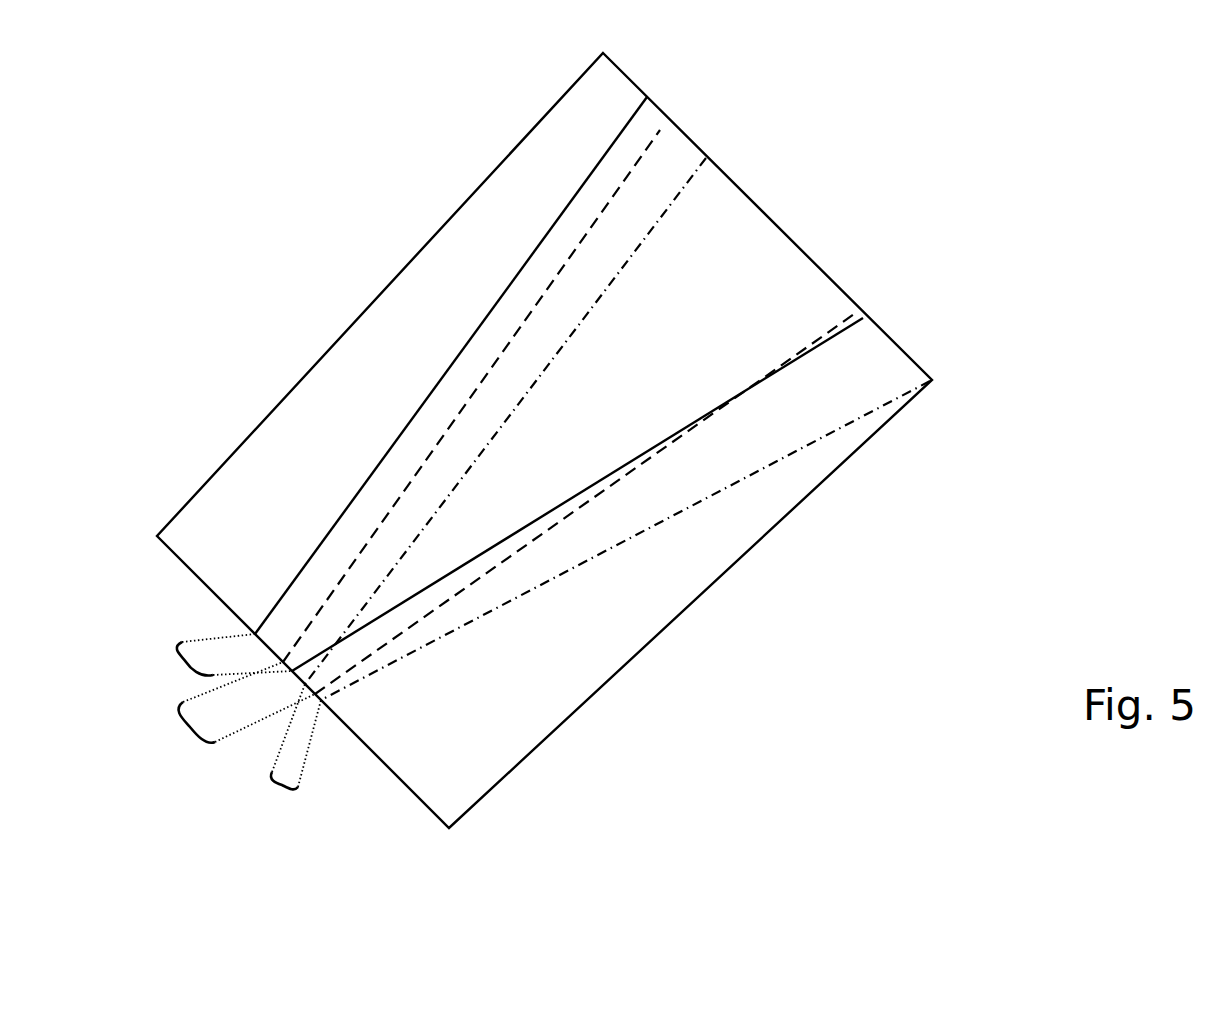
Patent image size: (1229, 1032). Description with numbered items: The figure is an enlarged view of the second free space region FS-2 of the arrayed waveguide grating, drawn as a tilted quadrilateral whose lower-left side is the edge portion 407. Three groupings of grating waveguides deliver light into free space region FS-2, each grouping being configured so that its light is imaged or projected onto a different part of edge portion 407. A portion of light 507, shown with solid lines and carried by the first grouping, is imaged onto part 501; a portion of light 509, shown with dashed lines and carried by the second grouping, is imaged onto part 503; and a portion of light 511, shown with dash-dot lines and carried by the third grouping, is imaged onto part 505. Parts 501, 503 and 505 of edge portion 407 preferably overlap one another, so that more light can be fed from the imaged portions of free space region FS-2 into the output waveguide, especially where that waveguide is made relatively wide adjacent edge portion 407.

The edge portion 407 is at (393, 776).
The part of edge portion 501 is at (219, 661).
The part of edge portion 503 is at (239, 713).
The part of edge portion 505 is at (293, 750).
The portion of light 507 is at (440, 382).
The portion of light 509 is at (660, 130).
The portion of light 511 is at (643, 245).
The second free space region FS-2 is at (748, 593).